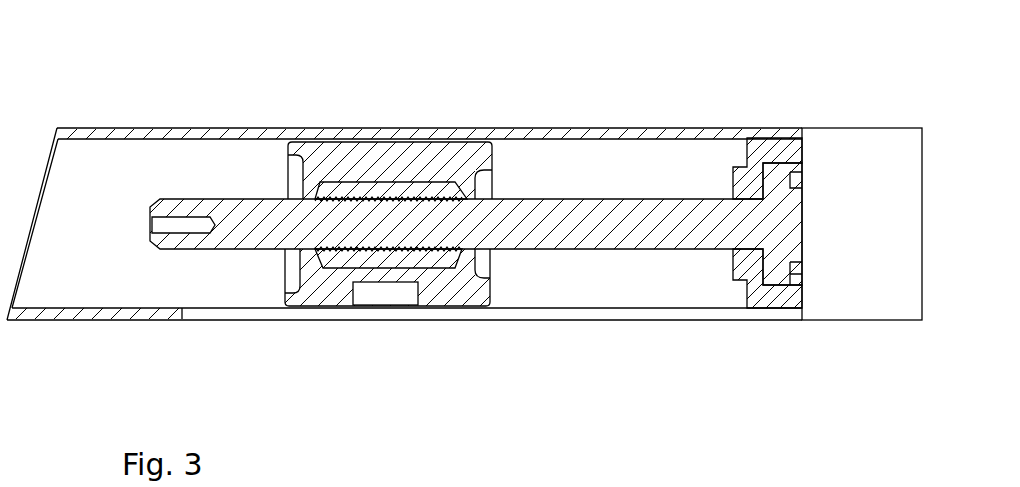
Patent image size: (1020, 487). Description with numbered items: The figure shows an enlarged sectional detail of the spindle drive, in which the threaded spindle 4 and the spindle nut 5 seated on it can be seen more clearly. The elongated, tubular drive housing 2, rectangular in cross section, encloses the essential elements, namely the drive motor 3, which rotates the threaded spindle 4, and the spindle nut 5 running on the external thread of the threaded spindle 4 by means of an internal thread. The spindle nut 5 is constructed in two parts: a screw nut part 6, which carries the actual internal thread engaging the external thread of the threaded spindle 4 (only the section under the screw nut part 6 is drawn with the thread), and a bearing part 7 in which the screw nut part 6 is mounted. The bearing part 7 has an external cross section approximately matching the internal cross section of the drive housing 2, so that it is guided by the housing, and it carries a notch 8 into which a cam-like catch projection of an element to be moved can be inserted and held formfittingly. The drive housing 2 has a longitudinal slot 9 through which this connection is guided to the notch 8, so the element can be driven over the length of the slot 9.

The drive housing 2 is at (872, 170).
The drive motor 3 is at (795, 205).
The threaded spindle 4 is at (590, 222).
The spindle nut 5 is at (270, 150).
The screw nut part 6 is at (362, 190).
The bearing part 7 is at (430, 155).
The notch 8 is at (380, 287).
The slot 9 is at (242, 313).